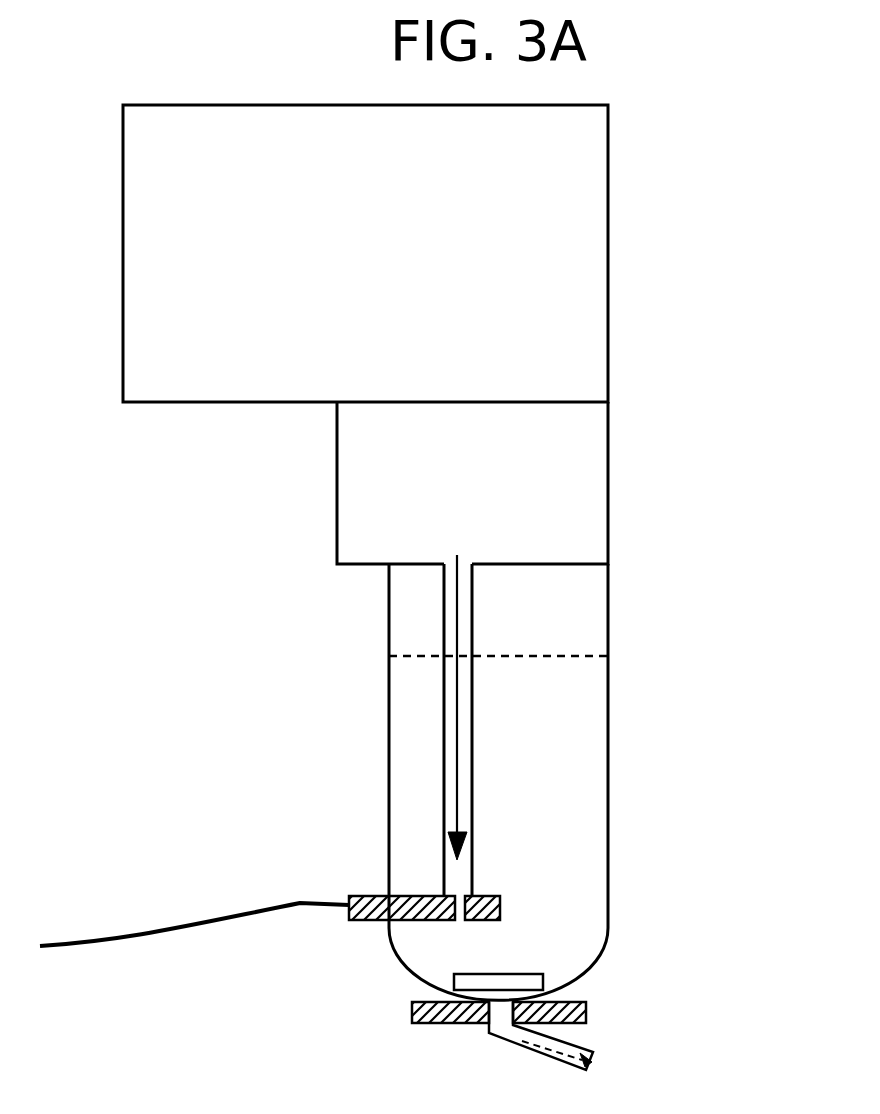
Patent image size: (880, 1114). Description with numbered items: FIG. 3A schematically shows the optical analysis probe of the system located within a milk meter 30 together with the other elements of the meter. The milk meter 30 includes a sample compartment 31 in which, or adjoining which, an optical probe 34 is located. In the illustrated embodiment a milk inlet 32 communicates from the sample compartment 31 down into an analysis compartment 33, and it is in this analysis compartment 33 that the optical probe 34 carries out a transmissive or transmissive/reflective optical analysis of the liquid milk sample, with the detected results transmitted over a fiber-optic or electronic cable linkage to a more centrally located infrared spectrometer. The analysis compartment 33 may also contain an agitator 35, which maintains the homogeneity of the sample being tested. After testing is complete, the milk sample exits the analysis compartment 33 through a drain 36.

The milk meter 30 is at (365, 253).
The sample compartment 31 is at (472, 483).
The milk inlet 32 is at (455, 621).
The analysis compartment 33 is at (498, 782).
The optical probe 34 is at (375, 895).
The agitator 35 is at (543, 974).
The drain 36 is at (562, 1050).